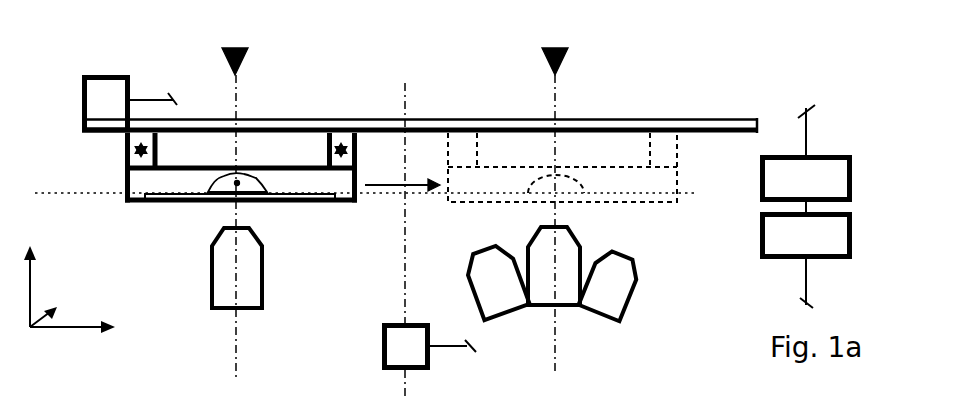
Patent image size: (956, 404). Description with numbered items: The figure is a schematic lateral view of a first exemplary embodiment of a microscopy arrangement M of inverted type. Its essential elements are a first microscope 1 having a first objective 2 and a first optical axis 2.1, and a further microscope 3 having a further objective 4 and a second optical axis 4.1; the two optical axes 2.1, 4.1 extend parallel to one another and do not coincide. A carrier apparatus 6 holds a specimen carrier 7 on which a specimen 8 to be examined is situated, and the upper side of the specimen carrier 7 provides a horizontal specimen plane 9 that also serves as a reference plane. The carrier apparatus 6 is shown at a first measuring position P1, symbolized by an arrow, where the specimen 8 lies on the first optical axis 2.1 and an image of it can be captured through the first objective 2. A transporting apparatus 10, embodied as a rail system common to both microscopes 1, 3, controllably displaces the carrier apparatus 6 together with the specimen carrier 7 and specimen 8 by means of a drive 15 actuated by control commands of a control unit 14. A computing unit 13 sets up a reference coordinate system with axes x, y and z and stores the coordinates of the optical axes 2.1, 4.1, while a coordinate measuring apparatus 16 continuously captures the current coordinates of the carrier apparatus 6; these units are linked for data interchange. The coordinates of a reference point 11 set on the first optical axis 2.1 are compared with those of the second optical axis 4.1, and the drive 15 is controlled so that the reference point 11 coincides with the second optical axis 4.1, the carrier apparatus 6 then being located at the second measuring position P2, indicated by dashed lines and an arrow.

The first microscope 1 is at (121, 275).
The first objective 2 is at (249, 257).
The first optical axis 2.1 is at (237, 333).
The further microscope 3 is at (597, 272).
The further objective 4 is at (573, 262).
The second optical axis 4.1 is at (556, 325).
The carrier apparatus 6 is at (125, 158).
The specimen carrier 7 is at (152, 203).
The specimen 8 is at (222, 204).
The specimen plane 9 is at (65, 193).
The transporting apparatus 10 is at (683, 120).
The reference point 11 is at (217, 210).
The computing unit 13 is at (806, 255).
The control unit 14 is at (806, 152).
The drive 15 is at (131, 104).
The coordinate measuring apparatus 16 is at (431, 241).
The microscopy arrangement M is at (196, 88).
The first measuring position P1 is at (236, 47).
The second measuring position P2 is at (555, 47).